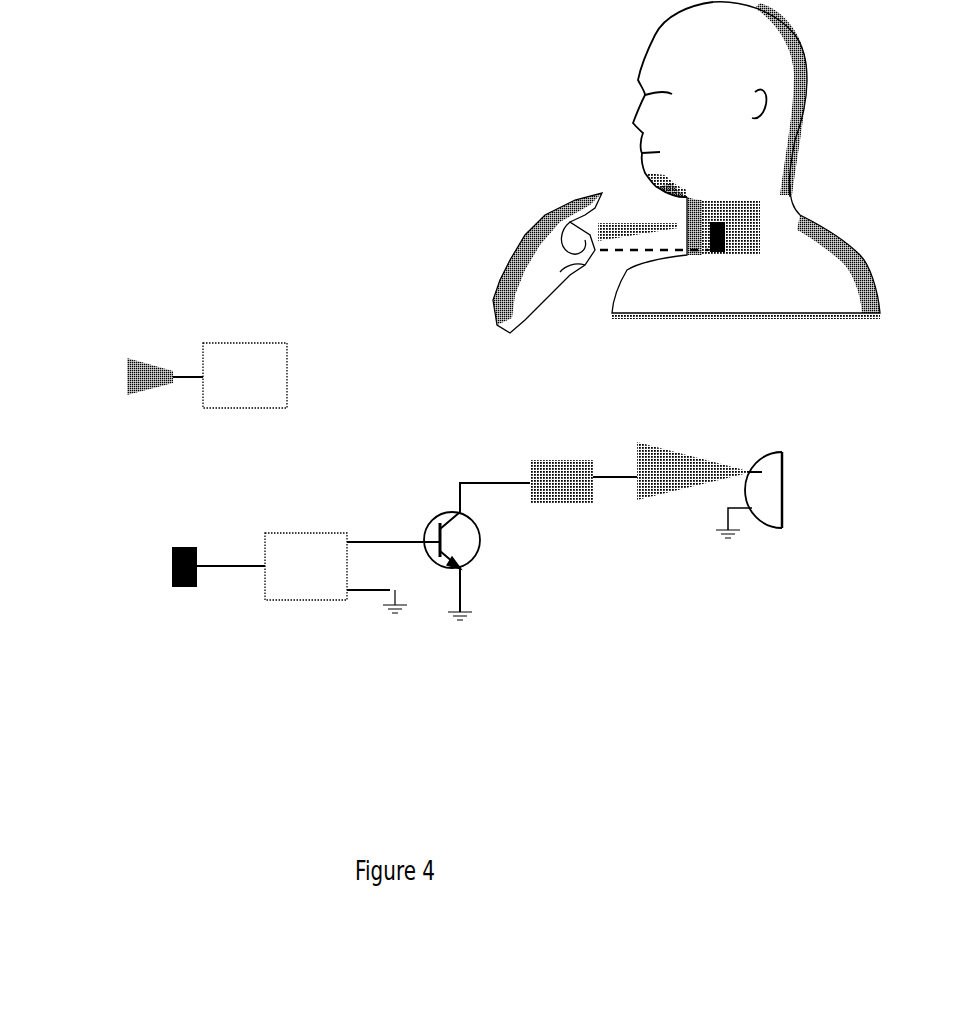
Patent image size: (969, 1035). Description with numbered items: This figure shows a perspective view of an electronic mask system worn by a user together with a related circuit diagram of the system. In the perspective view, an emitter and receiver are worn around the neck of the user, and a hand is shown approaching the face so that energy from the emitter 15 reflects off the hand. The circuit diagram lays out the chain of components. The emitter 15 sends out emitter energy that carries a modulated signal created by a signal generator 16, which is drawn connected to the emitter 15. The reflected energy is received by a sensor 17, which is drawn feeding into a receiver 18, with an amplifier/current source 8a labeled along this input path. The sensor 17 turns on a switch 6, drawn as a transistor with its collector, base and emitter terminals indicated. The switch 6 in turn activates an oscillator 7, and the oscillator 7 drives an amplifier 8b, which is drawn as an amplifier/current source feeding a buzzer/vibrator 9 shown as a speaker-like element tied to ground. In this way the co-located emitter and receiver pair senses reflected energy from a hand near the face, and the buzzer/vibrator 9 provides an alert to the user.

The emitter 15 is at (434, 294).
The signal generator 16 is at (517, 315).
The amplifier/current source 8a is at (327, 518).
The amplifier 8b is at (711, 448).
The sensor 17 is at (160, 567).
The receiver 18 is at (311, 582).
The oscillator 7 is at (576, 504).
The switch 6 is at (498, 551).
The buzzer/vibrator 9 is at (761, 539).